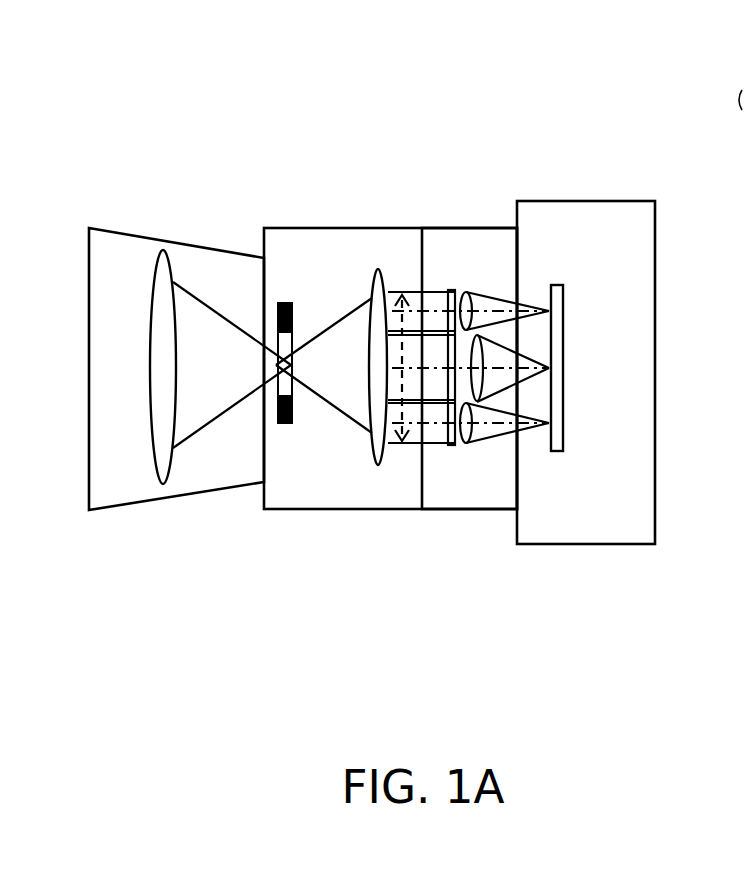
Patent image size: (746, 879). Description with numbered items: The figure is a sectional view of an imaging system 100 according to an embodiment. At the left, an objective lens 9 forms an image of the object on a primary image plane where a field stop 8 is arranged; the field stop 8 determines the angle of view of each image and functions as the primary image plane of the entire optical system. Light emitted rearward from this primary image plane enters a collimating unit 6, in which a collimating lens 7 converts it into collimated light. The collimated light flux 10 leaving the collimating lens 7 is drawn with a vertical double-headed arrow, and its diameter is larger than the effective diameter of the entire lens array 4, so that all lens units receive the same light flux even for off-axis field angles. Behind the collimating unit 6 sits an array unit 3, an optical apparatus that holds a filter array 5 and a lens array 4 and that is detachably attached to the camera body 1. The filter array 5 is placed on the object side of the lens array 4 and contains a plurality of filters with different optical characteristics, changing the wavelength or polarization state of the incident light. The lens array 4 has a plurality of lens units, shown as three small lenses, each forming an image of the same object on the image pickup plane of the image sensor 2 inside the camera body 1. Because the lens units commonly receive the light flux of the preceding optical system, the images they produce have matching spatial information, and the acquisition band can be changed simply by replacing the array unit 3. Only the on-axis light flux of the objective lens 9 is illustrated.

The imaging system 100 is at (98, 67).
The camera body 1 is at (558, 206).
The image sensor 2 is at (564, 323).
The array unit 3 is at (460, 228).
The lens array 4 is at (467, 445).
The filter array 5 is at (453, 447).
The collimating unit 6 is at (270, 228).
The collimating lens 7 is at (380, 458).
The field stop 8 is at (287, 425).
The objective lens 9 is at (116, 230).
The collimated light flux 10 is at (409, 445).